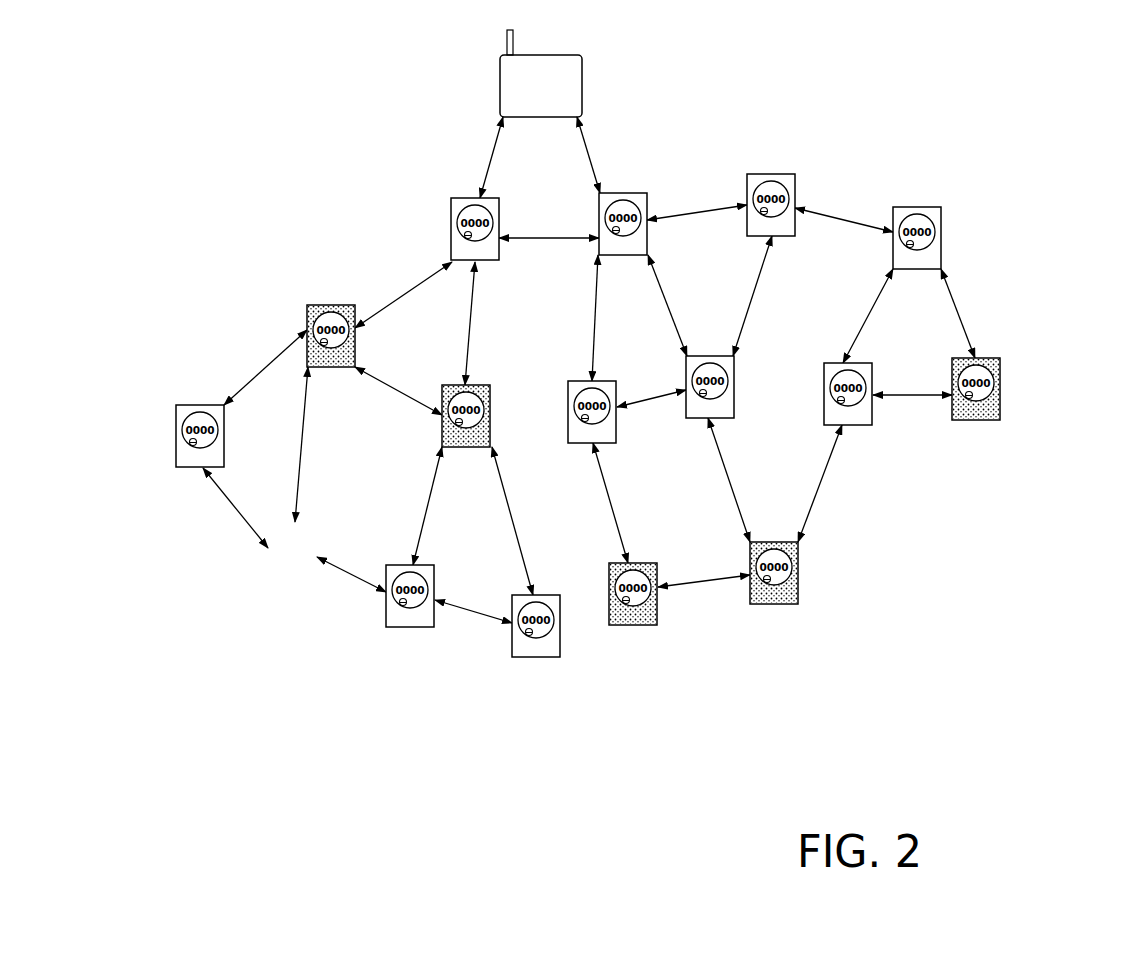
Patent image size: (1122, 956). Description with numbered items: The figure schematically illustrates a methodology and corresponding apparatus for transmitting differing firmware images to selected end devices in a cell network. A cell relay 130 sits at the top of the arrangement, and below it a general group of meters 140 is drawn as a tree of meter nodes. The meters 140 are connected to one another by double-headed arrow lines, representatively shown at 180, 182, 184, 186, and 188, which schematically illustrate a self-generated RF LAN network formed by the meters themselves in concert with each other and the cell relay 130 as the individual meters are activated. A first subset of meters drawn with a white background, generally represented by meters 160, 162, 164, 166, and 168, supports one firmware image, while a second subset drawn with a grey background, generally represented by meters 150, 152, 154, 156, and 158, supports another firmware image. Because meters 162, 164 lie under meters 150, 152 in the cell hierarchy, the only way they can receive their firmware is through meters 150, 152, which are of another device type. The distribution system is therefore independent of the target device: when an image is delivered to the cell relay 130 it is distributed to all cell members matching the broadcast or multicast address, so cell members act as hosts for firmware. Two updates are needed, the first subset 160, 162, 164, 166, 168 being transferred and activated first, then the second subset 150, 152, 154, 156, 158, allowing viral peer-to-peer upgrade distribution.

The cell relay 130 is at (582, 73).
The meters 140 is at (263, 178).
The meter 150 is at (307, 320).
The meter 152 is at (480, 385).
The meter 154 is at (657, 625).
The meter 156 is at (795, 604).
The meter 158 is at (990, 422).
The meter 160 is at (452, 197).
The meter 162 is at (175, 467).
The meter 164 is at (383, 625).
The meter 166 is at (734, 375).
The meter 168 is at (790, 173).
The double-headed arrow line 180 is at (260, 386).
The double-headed arrow line 182 is at (237, 517).
The double-headed arrow line 184 is at (703, 582).
The double-headed arrow line 186 is at (620, 527).
The double-headed arrow line 188 is at (947, 325).